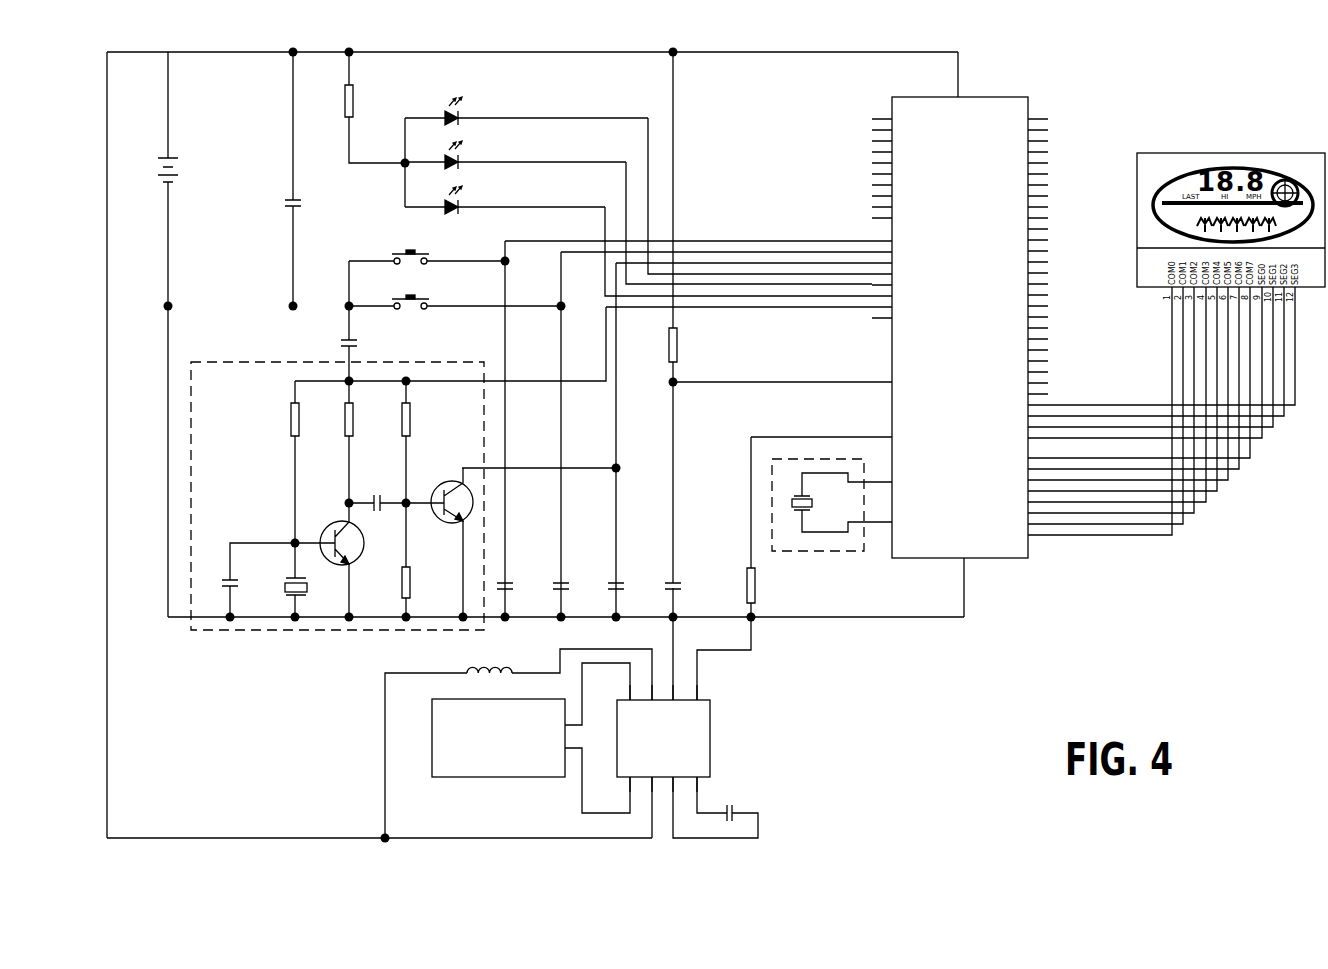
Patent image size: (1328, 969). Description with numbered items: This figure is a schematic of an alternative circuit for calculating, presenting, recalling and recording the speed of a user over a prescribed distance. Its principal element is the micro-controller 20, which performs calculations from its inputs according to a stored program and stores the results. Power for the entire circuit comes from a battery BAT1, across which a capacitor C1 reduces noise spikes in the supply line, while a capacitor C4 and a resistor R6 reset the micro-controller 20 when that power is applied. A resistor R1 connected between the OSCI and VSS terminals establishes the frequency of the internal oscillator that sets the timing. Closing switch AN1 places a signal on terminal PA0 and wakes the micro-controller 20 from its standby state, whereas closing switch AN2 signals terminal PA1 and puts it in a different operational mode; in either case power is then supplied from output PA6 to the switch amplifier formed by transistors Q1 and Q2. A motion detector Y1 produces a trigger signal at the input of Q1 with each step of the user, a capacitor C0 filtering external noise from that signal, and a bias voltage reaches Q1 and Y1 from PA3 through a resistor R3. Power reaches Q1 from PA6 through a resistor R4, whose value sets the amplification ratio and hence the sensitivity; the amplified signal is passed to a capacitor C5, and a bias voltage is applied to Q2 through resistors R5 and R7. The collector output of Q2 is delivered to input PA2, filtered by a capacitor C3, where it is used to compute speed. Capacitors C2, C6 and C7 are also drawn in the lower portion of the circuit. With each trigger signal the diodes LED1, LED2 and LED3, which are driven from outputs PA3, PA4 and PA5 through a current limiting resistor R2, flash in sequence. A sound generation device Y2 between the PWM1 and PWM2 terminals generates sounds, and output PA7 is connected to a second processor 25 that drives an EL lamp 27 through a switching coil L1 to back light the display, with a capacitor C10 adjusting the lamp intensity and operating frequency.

The micro-controller 20 is at (1000, 90).
The second processor 25 is at (710, 720).
The EL lamp 27 is at (432, 710).
The battery BAT1 is at (198, 179).
The capacitor C1 is at (310, 179).
The resistor R2 is at (375, 107).
The light emitting diode LED1 is at (526, 151).
The light emitting diode LED2 is at (515, 155).
The light emitting diode LED3 is at (505, 199).
The switch AN1 is at (408, 246).
The switch AN2 is at (408, 291).
The capacitor C2 is at (361, 343).
The resistor R3 is at (279, 462).
The resistor R4 is at (333, 442).
The resistor R7 is at (390, 442).
The resistor R5 is at (391, 560).
The transistor Q1 is at (329, 557).
The transistor Q2 is at (439, 536).
The capacitor C5 is at (377, 489).
The capacitor C0 is at (249, 580).
The motion detector Y1 is at (275, 580).
The capacitor C6 is at (518, 587).
The capacitor C7 is at (574, 587).
The capacitor C3 is at (629, 587).
The capacitor C4 is at (686, 475).
The resistor R6 is at (689, 207).
The resistor R1 is at (768, 585).
The sound generation device Y2 is at (822, 505).
The switching coil L1 is at (489, 659).
The capacitor C10 is at (731, 801).